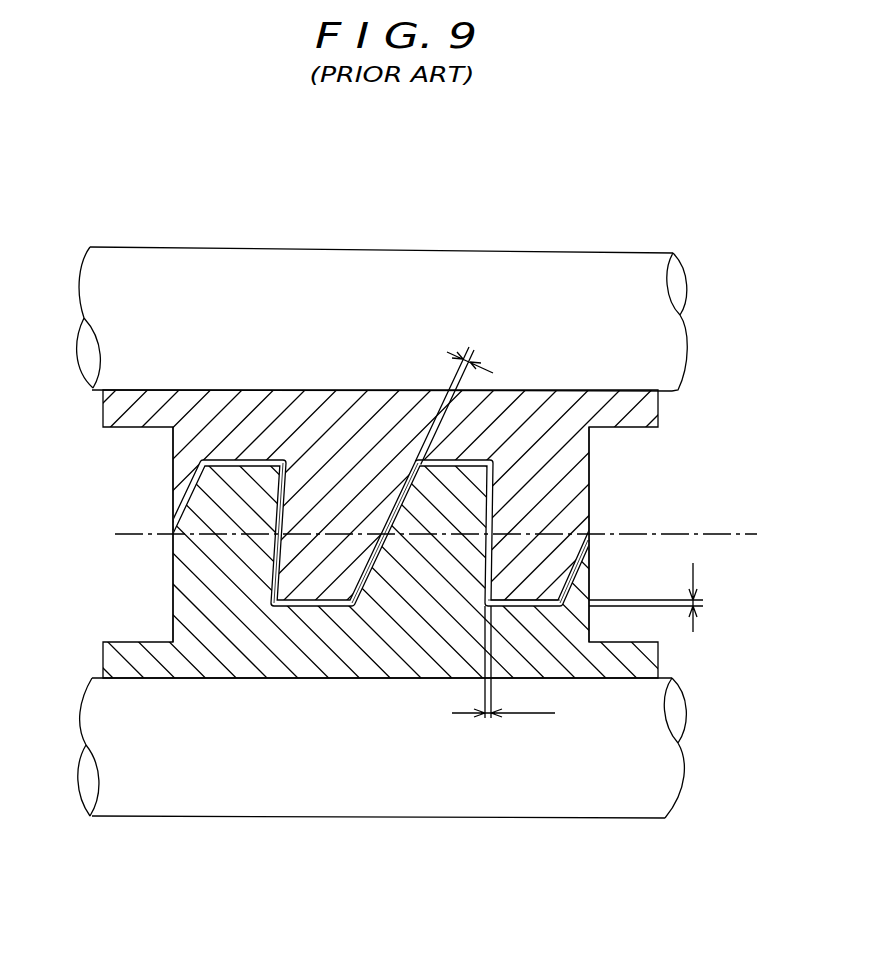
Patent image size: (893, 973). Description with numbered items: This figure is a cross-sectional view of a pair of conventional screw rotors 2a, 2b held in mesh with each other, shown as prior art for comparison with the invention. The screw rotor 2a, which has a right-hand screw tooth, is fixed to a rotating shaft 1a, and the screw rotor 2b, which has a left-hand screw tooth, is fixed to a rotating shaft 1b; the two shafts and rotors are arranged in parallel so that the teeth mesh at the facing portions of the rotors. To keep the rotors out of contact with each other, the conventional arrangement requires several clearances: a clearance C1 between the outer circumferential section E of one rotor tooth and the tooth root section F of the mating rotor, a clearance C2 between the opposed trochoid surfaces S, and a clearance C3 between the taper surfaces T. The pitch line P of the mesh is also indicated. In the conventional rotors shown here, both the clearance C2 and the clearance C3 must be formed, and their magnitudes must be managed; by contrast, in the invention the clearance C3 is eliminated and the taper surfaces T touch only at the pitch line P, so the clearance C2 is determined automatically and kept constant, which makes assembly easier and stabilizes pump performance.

The rotating shaft 1a is at (310, 327).
The rotating shaft 1b is at (424, 778).
The screw rotor 2a is at (203, 413).
The screw rotor 2b is at (257, 650).
The trochoid surface S is at (482, 520).
The tooth root section F is at (535, 600).
The outer circumferential section E is at (452, 460).
The taper surface T is at (380, 574).
The pitch line P is at (723, 535).
The clearance C1 is at (646, 588).
The clearance C2 is at (503, 662).
The clearance C3 is at (454, 387).